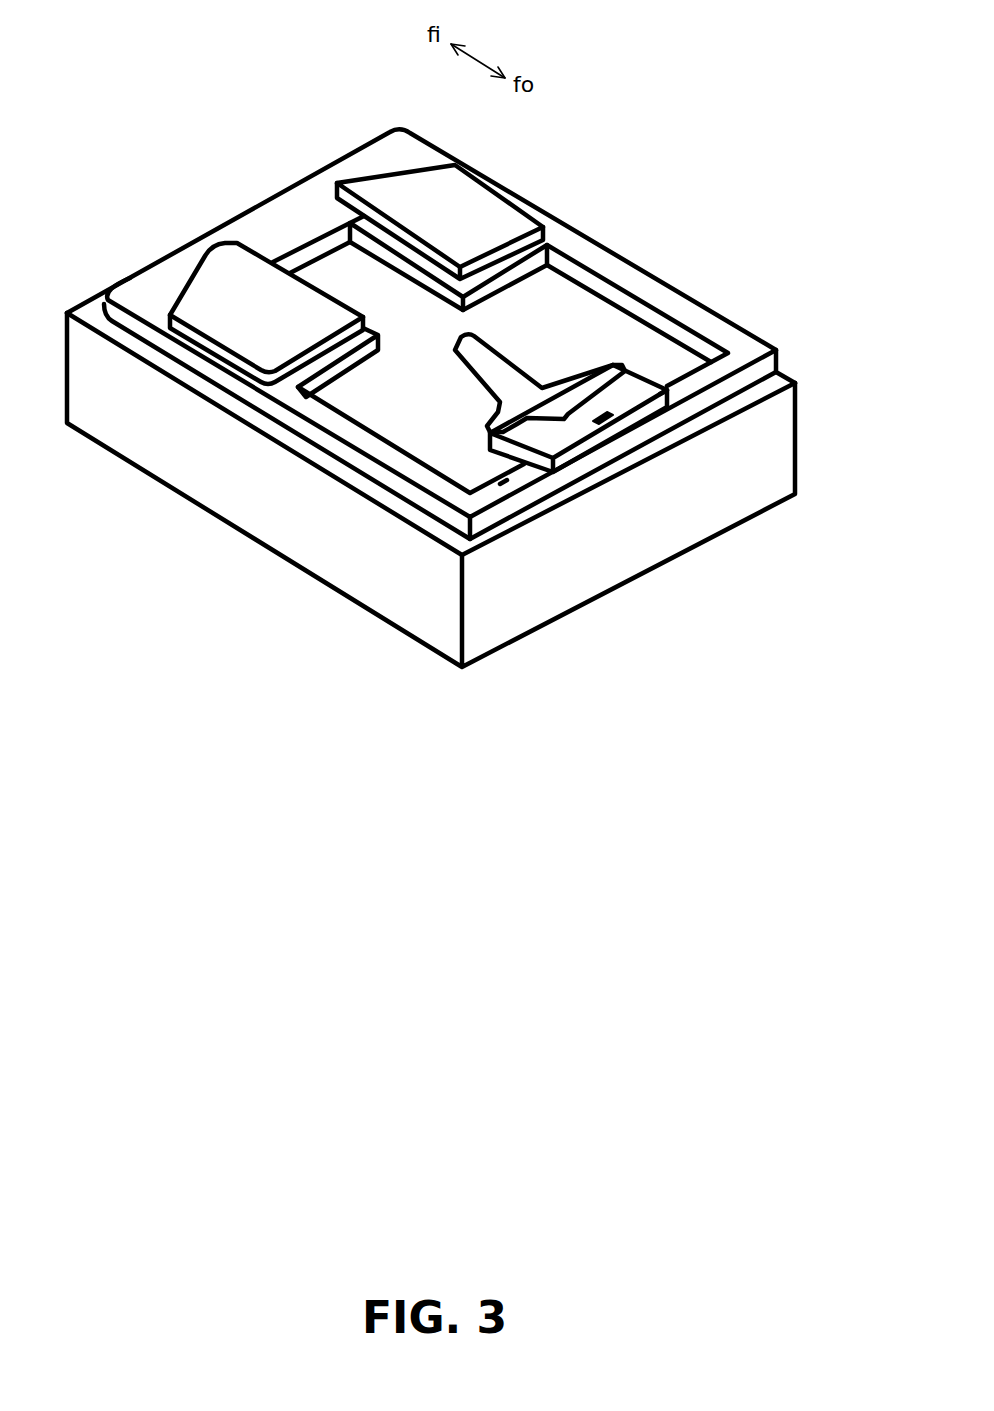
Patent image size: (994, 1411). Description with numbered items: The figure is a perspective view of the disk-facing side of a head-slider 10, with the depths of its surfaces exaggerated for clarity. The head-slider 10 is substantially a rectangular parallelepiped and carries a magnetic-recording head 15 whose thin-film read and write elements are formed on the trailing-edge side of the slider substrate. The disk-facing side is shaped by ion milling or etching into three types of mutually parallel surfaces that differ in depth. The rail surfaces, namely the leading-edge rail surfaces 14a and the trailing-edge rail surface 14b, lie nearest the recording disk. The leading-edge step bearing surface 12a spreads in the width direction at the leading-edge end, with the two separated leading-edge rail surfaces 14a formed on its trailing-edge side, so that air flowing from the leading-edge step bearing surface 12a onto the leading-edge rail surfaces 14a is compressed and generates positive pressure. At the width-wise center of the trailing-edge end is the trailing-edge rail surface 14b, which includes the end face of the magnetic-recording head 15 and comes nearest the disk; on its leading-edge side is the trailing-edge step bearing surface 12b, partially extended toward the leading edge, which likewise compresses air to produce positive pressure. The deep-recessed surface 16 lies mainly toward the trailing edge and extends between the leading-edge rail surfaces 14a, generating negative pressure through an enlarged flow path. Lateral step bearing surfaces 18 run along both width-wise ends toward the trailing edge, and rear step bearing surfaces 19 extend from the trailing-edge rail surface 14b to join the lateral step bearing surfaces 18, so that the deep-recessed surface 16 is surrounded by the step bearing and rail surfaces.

The head-slider 10 is at (148, 160).
The leading-edge step bearing surface 12a is at (291, 217).
The trailing-edge step bearing surface 12b is at (500, 373).
The leading-edge rail surfaces 14a is at (241, 298).
The trailing-edge rail surface 14b is at (634, 393).
The magnetic-recording head 15 is at (600, 412).
The deep-recessed surface 16 is at (425, 398).
The lateral step bearing surfaces 18 is at (655, 292).
The rear step bearing surfaces 19 is at (683, 388).